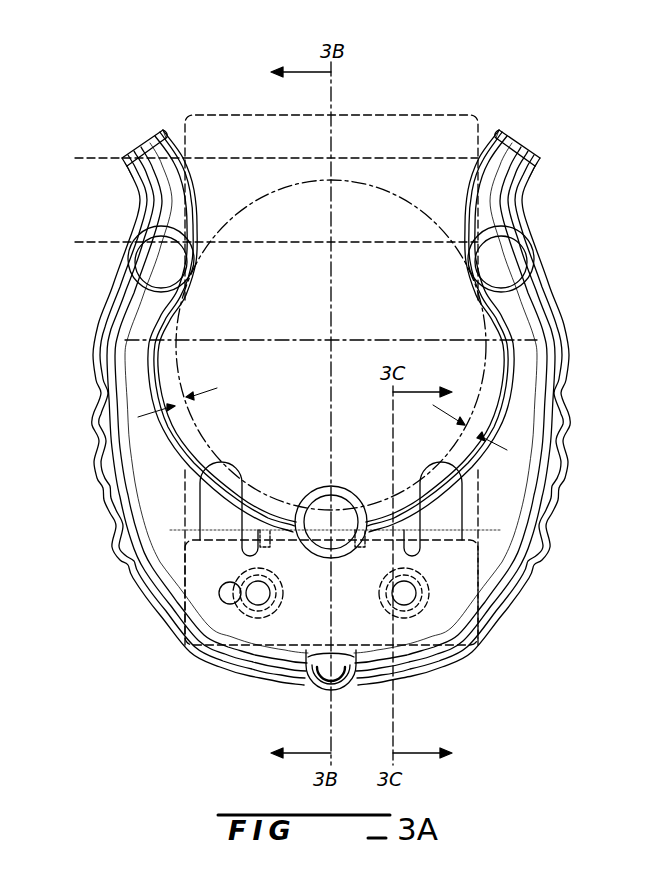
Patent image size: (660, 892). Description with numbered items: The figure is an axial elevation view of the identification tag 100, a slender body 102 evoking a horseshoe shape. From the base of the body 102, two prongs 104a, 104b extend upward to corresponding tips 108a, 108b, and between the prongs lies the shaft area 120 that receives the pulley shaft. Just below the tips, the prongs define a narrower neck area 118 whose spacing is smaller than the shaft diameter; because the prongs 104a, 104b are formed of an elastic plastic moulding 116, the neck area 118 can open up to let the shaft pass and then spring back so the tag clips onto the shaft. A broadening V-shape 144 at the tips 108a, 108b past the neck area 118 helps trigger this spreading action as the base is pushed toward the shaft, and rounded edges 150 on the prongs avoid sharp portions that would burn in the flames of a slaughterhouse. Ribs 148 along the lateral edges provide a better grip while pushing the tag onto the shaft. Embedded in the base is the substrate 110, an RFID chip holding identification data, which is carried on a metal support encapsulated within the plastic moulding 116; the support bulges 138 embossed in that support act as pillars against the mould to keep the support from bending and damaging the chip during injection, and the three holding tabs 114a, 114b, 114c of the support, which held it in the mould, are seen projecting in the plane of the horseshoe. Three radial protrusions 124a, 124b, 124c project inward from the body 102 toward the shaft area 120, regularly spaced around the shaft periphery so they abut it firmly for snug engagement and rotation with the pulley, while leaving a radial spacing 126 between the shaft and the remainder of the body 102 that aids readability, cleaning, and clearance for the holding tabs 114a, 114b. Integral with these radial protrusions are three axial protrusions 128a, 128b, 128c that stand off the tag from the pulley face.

The identification tag 100 is at (424, 80).
The slender body 102 is at (127, 315).
The first prong 104a is at (137, 200).
The second prong 104b is at (527, 213).
The first tip 108a is at (145, 153).
The second tip 108b is at (520, 140).
The substrate 110 is at (187, 657).
The first holding tab 114a is at (233, 462).
The second holding tab 114b is at (430, 460).
The third holding tab 114c is at (343, 687).
The plastic moulding 116 is at (503, 500).
The narrower neck area 118 is at (82, 158).
The shaft area 120 is at (390, 192).
The first radial protrusion 124a is at (190, 267).
The second radial protrusion 124b is at (473, 277).
The third radial protrusion 124c is at (337, 490).
The radial spacing 126 is at (180, 402).
The first axial protrusion 128a is at (187, 240).
The second axial protrusion 128b is at (475, 245).
The third axial protrusion 128c is at (310, 498).
The support bulges 138 is at (272, 622).
The broadening V-shape 144 is at (367, 115).
The ribs 148 is at (133, 563).
The rounded edges 150 is at (160, 128).